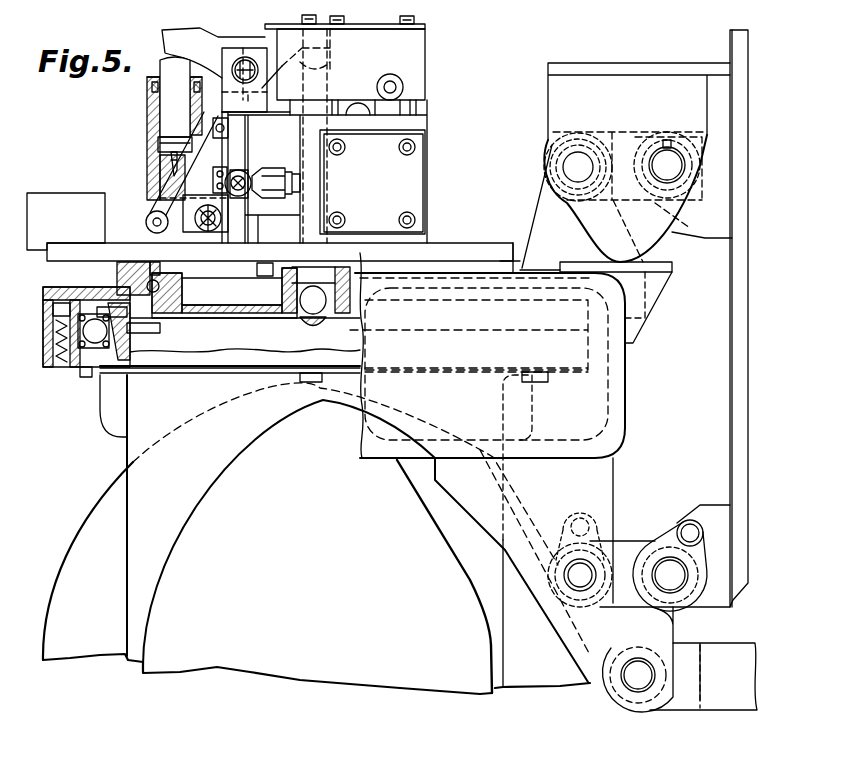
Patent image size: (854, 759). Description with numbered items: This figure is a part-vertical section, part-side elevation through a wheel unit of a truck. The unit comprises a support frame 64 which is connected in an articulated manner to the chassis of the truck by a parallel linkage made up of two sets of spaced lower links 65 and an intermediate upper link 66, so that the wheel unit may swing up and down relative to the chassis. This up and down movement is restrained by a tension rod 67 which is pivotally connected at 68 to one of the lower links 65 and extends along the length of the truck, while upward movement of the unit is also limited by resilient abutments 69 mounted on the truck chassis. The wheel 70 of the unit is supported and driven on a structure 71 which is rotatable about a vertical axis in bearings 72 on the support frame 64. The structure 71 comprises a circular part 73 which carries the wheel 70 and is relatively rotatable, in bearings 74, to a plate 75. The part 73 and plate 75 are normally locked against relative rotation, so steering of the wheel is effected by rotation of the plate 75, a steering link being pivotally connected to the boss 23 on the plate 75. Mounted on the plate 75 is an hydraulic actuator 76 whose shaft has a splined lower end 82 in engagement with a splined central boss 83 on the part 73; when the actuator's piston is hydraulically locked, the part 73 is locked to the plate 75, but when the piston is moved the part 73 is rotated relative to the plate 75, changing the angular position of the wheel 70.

The boss 23 is at (63, 195).
The plate 75 is at (147, 275).
The bearings 74 is at (153, 283).
The hydraulic actuator 76 is at (424, 128).
The structure 71 is at (430, 234).
The resilient abutments 69 is at (597, 92).
The intermediate upper link 66 is at (588, 133).
The support frame 64 is at (615, 377).
The lower links 65 is at (627, 553).
The tension rod 67 is at (730, 655).
The pivotal connection 68 is at (633, 675).
The wheel 70 is at (101, 497).
The bearings 72 is at (90, 344).
The circular part 73 is at (170, 312).
The splined central boss 83 is at (278, 287).
The lower end of the shaft 82 is at (318, 280).